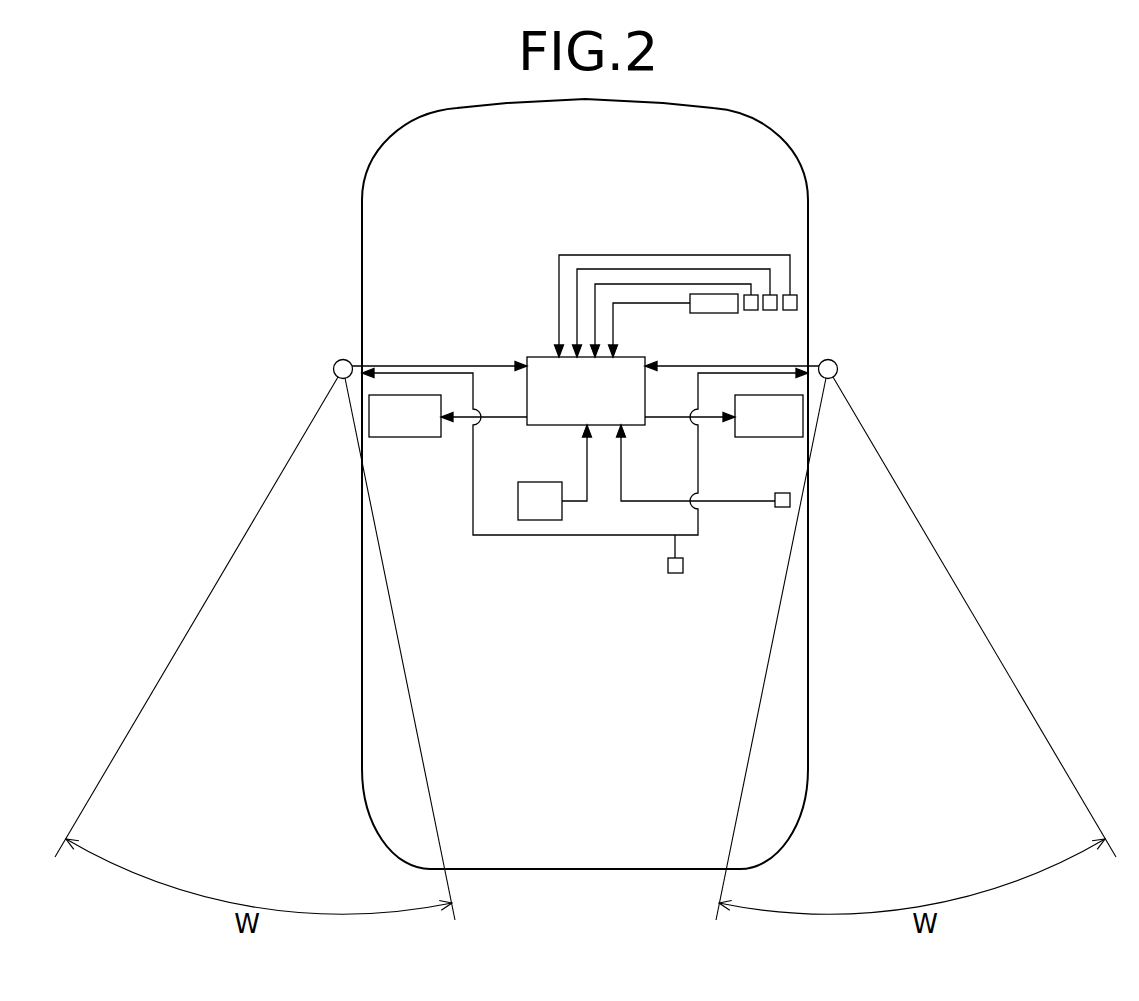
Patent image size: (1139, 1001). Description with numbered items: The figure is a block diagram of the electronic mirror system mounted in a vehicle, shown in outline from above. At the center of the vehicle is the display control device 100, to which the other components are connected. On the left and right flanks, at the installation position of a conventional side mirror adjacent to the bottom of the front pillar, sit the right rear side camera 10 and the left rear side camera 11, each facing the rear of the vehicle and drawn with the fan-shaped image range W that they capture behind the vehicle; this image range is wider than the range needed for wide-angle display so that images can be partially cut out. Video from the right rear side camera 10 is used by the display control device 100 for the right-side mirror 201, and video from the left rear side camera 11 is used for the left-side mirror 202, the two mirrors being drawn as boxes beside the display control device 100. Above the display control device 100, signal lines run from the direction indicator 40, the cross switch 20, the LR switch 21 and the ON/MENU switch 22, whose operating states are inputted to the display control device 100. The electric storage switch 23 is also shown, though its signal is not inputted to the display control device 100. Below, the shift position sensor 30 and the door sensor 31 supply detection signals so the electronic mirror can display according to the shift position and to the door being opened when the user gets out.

The display control device 100 is at (541, 357).
The right rear side camera 10 is at (838, 368).
The left rear side camera 11 is at (334, 366).
The cross switch 20 is at (755, 313).
The LR switch 21 is at (772, 312).
The ON/MENU switch 22 is at (796, 295).
The electric storage switch 23 is at (675, 573).
The shift position sensor 30 is at (536, 482).
The door sensor 31 is at (775, 507).
The direction indicator 40 is at (707, 314).
The right-side mirror 201 is at (753, 437).
The left-side mirror 202 is at (415, 437).